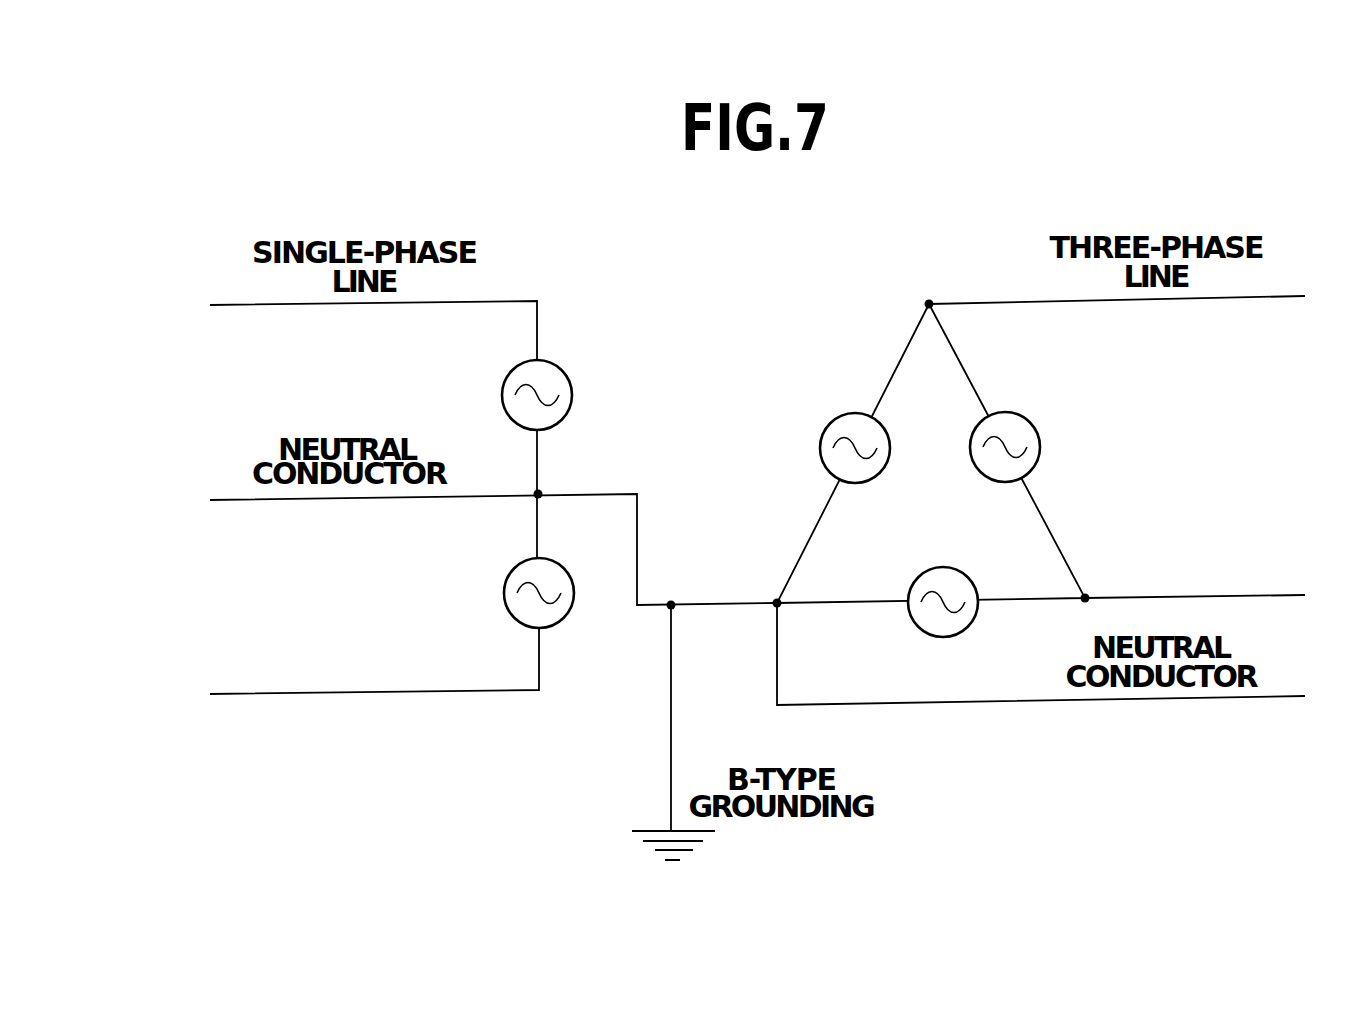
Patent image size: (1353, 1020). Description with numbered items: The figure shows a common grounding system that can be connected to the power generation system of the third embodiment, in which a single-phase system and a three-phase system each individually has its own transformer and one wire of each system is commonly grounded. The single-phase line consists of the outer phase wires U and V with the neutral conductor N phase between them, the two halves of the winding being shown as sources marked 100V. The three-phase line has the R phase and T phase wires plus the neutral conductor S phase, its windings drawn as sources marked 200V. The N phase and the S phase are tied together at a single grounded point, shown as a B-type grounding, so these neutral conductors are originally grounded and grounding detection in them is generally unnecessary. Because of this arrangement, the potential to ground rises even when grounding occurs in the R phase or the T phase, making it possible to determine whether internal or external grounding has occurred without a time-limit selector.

The U phase U is at (357, 323).
The N phase N is at (479, 545).
The V phase V is at (360, 669).
The R phase R is at (1130, 292).
The S phase S is at (1057, 657).
The T phase T is at (1209, 591).
The 100V AC source of single-phase line 100V is at (500, 494).
The 200V AC source of three-phase line 200V is at (929, 516).